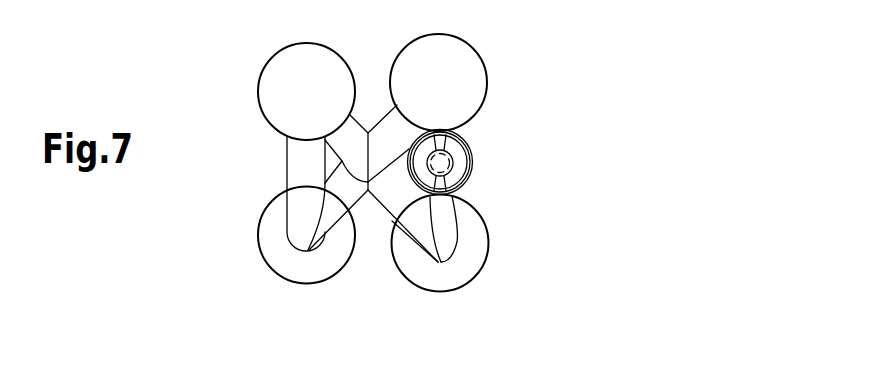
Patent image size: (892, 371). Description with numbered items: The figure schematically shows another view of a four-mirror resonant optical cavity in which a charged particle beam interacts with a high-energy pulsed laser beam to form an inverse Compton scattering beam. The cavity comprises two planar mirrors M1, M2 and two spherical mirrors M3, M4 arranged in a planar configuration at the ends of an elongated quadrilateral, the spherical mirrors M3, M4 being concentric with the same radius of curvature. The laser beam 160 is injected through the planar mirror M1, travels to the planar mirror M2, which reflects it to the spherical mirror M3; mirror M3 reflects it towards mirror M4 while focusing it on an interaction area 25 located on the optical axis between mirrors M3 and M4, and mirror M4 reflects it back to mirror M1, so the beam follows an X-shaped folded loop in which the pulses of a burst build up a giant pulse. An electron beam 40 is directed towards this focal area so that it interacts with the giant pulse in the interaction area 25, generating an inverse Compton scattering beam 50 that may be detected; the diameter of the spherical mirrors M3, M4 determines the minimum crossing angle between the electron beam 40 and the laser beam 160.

The planar mirror M1 is at (287, 67).
The planar mirror M2 is at (270, 222).
The spherical mirror M3 is at (468, 64).
The spherical mirror M4 is at (457, 271).
The laser beam 160 is at (466, 141).
The interaction area 25 is at (454, 160).
The inverse Compton scattering beam 50 is at (470, 166).
The electron beam 40 is at (458, 191).